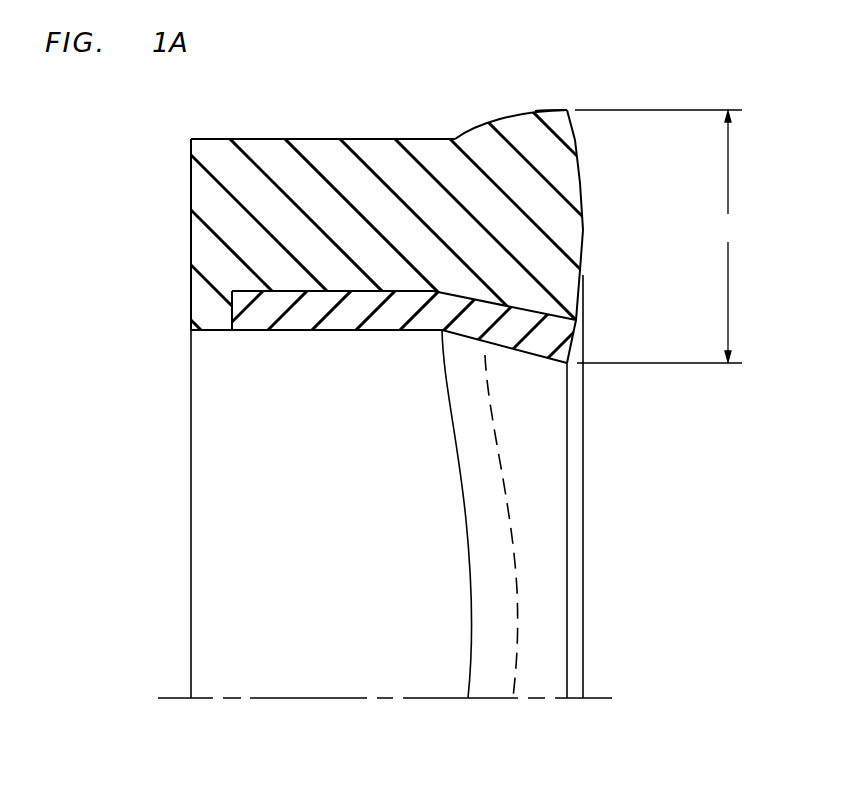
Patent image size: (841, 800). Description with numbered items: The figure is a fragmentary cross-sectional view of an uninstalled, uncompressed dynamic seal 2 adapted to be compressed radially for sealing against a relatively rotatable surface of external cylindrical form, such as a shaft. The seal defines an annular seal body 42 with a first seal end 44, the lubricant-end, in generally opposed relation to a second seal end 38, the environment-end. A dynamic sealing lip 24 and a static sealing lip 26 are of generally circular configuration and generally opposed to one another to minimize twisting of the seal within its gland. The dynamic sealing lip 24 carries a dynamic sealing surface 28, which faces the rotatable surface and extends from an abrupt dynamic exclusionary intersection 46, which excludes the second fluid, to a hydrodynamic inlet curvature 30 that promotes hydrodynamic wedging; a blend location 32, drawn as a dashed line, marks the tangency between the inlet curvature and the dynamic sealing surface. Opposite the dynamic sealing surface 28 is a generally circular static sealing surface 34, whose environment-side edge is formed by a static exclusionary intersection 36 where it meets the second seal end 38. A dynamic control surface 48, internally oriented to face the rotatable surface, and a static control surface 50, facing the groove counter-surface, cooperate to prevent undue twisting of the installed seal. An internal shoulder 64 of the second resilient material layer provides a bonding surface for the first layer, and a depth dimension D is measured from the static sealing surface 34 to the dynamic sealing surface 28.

The dynamic seal 2 is at (158, 181).
The dynamic sealing lip 24 is at (540, 345).
The static sealing lip 26 is at (553, 117).
The dynamic sealing surface 28 is at (518, 355).
The hydrodynamic inlet curvature 30 is at (463, 342).
The blend location 32 is at (510, 523).
The static sealing surface 34 is at (533, 112).
The static exclusionary intersection 36 is at (570, 108).
The second seal end 38 is at (580, 183).
The annular seal body 42 is at (358, 232).
The first seal end 44 is at (190, 228).
The dynamic exclusionary intersection 46 is at (567, 365).
The dynamic control surface 48 is at (337, 330).
The static control surface 50 is at (260, 138).
The internal shoulder 64 is at (233, 313).
The depth dimension D is at (658, 236).